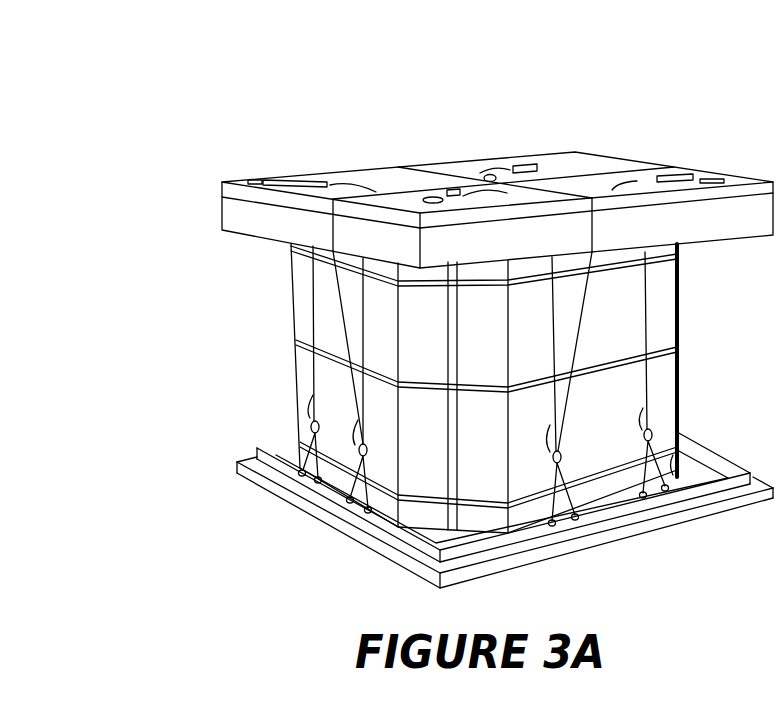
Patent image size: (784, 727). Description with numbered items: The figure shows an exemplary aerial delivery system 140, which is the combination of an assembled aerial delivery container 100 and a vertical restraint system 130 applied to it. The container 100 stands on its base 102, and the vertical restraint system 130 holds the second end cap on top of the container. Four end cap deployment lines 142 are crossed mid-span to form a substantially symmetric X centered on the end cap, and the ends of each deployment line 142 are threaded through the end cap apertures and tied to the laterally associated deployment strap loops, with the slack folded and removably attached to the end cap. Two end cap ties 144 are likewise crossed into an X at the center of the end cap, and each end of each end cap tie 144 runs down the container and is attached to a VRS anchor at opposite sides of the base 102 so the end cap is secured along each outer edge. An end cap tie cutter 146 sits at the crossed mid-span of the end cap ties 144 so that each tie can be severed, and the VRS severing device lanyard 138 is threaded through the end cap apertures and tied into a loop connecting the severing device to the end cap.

The aerial delivery container 100 is at (228, 388).
The base 102 is at (683, 539).
The vertical restraint system 130 is at (166, 256).
The VRS severing device lanyard 138 is at (507, 168).
The aerial delivery system 140 is at (296, 59).
The end cap deployment line 142 is at (308, 180).
The end cap tie 144 is at (458, 178).
The end cap tie cutter 146 is at (494, 152).